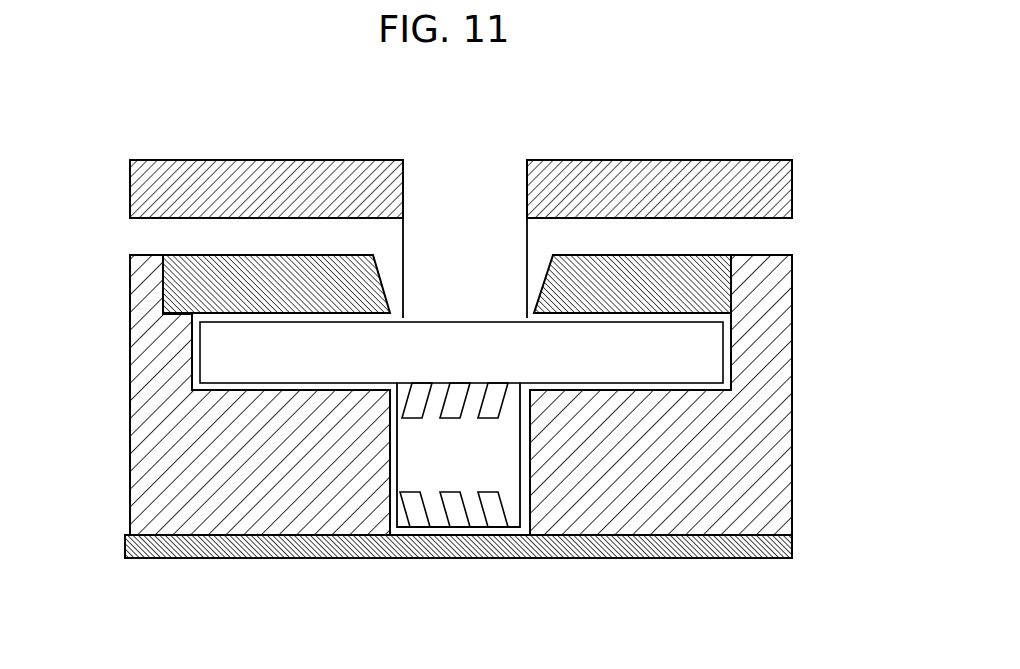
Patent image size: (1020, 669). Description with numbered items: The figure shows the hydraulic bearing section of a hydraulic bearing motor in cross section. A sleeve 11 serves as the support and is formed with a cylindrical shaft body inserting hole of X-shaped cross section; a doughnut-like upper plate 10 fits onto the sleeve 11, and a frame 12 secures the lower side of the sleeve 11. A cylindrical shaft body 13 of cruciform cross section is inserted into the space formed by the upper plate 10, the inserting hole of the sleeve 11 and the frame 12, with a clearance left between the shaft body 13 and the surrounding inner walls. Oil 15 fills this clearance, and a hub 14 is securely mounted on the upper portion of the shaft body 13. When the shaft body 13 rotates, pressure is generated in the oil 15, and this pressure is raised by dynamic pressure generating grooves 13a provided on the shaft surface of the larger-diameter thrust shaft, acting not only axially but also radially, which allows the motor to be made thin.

The upper plate 10 is at (590, 257).
The sleeve 11 is at (792, 355).
The frame 12 is at (600, 560).
The shaft body 13 is at (450, 160).
The dynamic pressure generating grooves 13a is at (417, 518).
The hub 14 is at (255, 160).
The oil 15 is at (329, 318).